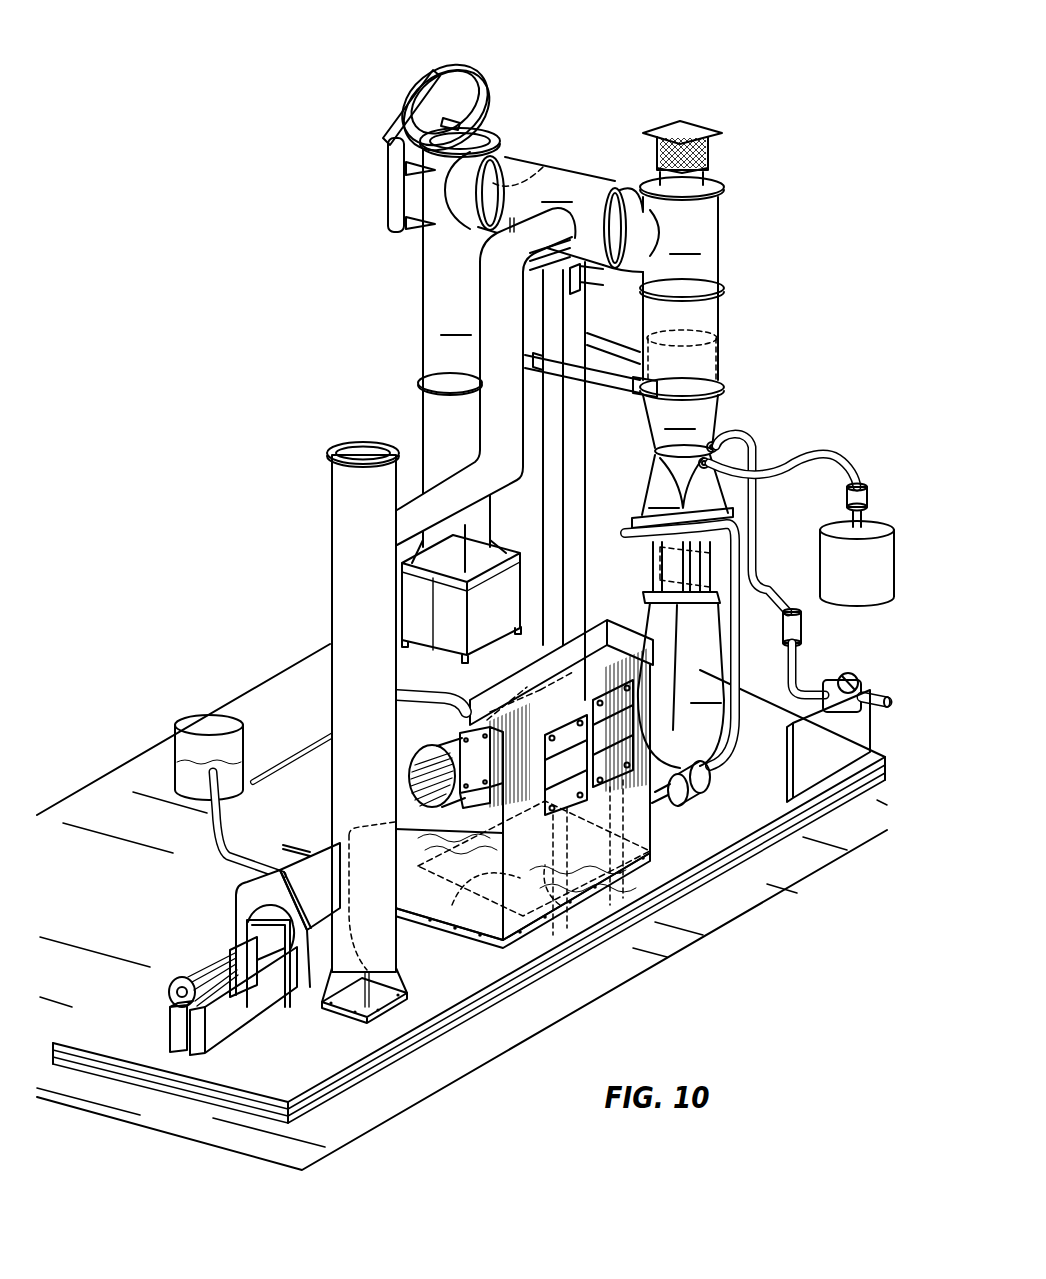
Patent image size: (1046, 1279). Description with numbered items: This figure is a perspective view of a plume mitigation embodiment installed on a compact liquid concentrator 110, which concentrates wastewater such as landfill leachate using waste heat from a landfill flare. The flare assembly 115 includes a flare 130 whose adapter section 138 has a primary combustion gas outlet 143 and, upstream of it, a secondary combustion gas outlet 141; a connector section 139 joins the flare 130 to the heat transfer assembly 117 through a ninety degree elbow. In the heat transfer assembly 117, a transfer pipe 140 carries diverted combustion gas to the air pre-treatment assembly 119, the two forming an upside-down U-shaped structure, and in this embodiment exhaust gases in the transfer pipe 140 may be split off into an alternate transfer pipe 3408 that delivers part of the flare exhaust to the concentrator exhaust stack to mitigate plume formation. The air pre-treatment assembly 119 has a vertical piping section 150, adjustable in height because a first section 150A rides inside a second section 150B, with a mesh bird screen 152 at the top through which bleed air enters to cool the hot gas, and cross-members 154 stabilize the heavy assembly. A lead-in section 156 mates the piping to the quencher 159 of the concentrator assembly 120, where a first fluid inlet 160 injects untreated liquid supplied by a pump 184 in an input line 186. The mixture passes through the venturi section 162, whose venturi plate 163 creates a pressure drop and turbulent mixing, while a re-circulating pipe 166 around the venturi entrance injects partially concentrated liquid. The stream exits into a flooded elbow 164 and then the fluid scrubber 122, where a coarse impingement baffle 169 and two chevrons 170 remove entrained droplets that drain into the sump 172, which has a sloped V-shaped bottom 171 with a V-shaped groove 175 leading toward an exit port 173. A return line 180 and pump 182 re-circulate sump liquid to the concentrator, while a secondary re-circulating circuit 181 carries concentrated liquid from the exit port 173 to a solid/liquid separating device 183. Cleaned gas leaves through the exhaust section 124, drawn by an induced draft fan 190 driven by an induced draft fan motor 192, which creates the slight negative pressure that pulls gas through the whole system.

The compact liquid concentrator 110 is at (626, 71).
The flare assembly 115 is at (380, 339).
The heat transfer assembly 117 is at (606, 164).
The air pre-treatment assembly 119 is at (745, 284).
The concentrator assembly 120 is at (758, 525).
The fluid scrubber 122 is at (662, 825).
The exhaust section 124 is at (323, 769).
The flare 130 is at (422, 402).
The adapter section 138 is at (459, 356).
The connector section 139 is at (448, 173).
The transfer pipe 140 is at (551, 212).
The secondary combustion gas outlet 141 is at (547, 177).
The primary combustion gas outlet 143 is at (477, 130).
The vertical piping section 150 is at (663, 288).
The first section 150A is at (718, 354).
The second section 150B is at (722, 331).
The mesh bird screen 152 is at (703, 153).
The cross-members 154 is at (612, 338).
The lead-in section 156 is at (680, 426).
The quencher 159 is at (685, 485).
The first fluid inlet 160 is at (720, 452).
The venturi section 162 is at (641, 568).
The venturi plate 163 is at (690, 585).
The flooded elbow 164 is at (681, 685).
The re-circulating pipe 166 is at (740, 541).
The coarse impingement baffle 169 is at (609, 672).
The chevrons 170 is at (540, 681).
The V-shaped bottom 171 is at (560, 905).
The sump 172 is at (650, 847).
The exit port 173 is at (722, 752).
The V-shaped groove 175 is at (452, 905).
The return line 180 is at (738, 758).
The secondary re-circulating circuit 181 is at (312, 738).
The pump 182 is at (702, 792).
The solid/liquid separating device 183 is at (193, 715).
The pump 184 is at (846, 676).
The input line 186 is at (803, 660).
The induced draft fan 190 is at (238, 903).
The induced draft fan motor 192 is at (200, 975).
The alternate transfer pipe 3408 is at (497, 290).